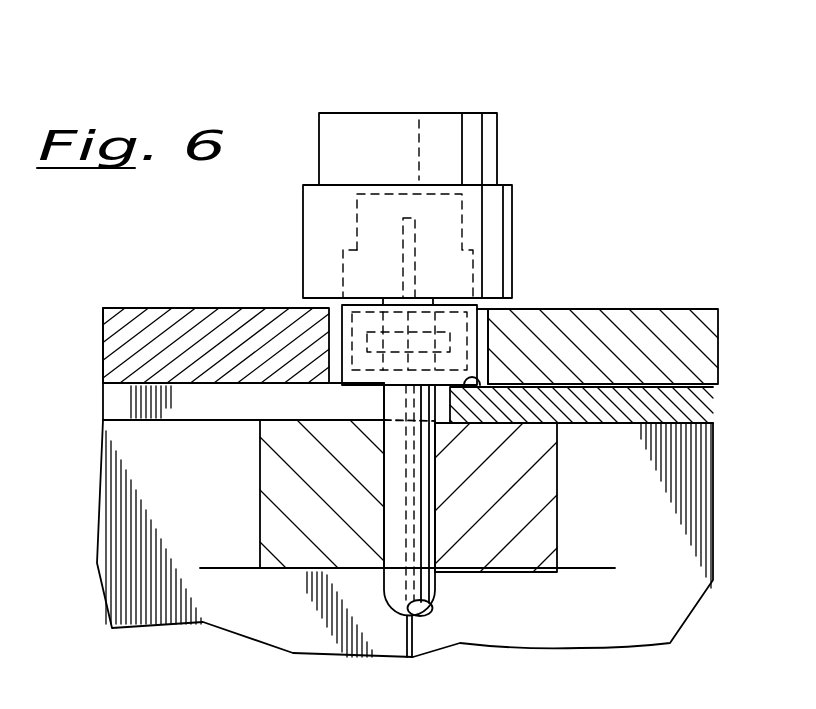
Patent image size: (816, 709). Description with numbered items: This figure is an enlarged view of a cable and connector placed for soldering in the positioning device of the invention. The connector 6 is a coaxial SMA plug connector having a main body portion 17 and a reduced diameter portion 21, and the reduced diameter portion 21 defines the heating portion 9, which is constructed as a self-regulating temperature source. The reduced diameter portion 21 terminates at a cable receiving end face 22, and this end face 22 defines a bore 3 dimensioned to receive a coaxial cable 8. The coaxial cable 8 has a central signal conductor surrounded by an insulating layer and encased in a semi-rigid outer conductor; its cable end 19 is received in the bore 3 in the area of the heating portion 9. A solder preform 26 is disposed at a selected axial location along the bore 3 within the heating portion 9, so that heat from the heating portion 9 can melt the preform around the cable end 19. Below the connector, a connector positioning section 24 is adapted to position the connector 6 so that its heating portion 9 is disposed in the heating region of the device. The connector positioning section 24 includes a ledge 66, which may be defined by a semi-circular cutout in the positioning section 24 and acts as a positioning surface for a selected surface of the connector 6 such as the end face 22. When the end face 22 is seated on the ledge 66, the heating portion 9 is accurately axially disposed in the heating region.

The connector 6 is at (437, 113).
The main body portion 17 is at (513, 238).
The solder preform 26 is at (383, 333).
The heating portion 9 is at (352, 352).
The reduced diameter portion 21 is at (478, 325).
The cable end 19 is at (493, 360).
The cable receiving end face 22 is at (360, 385).
The bore 3 is at (417, 390).
The ledge 66 is at (476, 378).
The connector positioning section 24 is at (582, 410).
The coaxial cable 8 is at (433, 490).